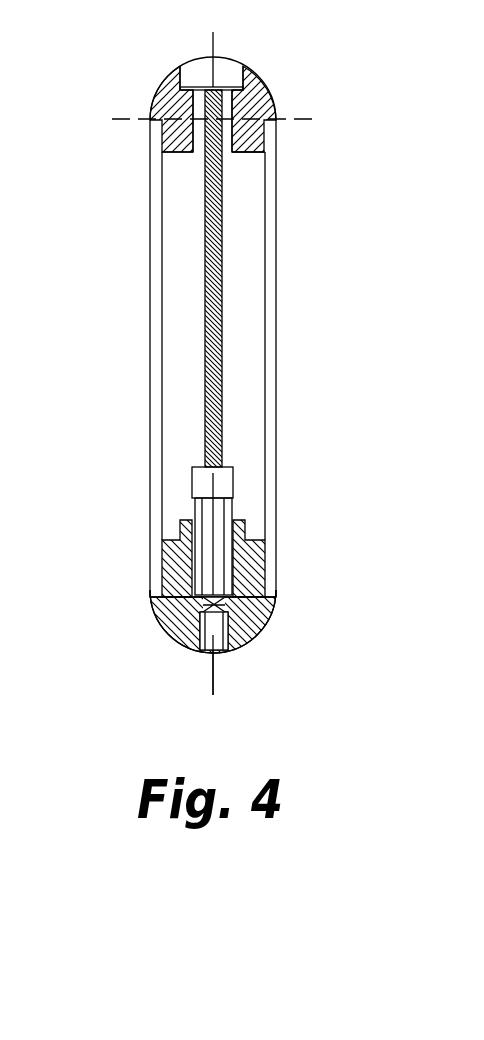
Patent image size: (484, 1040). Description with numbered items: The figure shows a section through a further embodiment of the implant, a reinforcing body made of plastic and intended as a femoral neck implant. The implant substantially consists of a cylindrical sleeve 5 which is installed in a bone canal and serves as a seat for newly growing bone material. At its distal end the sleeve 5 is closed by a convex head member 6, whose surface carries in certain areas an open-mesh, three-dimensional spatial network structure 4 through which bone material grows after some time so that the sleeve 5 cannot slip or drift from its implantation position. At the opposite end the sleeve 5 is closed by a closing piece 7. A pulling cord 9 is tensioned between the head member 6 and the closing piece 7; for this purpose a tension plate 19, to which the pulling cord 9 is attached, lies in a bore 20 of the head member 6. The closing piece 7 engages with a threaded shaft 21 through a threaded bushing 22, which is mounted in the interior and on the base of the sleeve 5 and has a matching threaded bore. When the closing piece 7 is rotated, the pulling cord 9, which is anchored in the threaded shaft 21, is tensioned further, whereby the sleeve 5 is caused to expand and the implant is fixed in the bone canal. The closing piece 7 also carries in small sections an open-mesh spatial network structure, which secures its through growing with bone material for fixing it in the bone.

The open-mesh, three-dimensional spatial network structure 4 is at (272, 612).
The cylindrical sleeve 5 is at (277, 182).
The convex head member 6 is at (263, 88).
The closing piece 7 is at (264, 623).
The pulling cord 9 is at (222, 365).
The tension plate 19 is at (222, 90).
The bore 20 is at (180, 89).
The threaded shaft 21 is at (256, 551).
The threaded bushing 22 is at (152, 585).